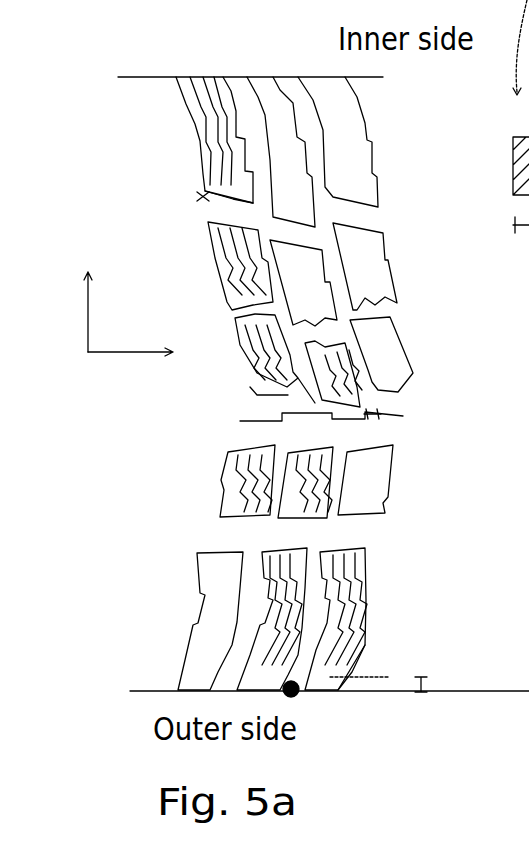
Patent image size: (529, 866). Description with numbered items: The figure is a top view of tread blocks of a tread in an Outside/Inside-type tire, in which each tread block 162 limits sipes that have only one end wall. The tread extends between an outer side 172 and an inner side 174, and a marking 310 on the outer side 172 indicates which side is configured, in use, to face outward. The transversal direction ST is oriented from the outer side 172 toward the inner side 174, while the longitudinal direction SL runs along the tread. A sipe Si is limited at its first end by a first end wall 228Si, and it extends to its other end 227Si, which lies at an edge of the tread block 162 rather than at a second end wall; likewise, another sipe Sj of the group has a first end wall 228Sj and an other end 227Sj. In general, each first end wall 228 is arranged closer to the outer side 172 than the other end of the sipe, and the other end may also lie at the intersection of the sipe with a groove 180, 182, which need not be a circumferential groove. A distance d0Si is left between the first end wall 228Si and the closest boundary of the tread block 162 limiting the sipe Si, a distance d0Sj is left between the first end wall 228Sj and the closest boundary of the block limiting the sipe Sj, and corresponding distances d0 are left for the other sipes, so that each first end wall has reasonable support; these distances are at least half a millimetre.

The inner side 174 is at (145, 77).
The outer side 172 is at (153, 693).
The tread block 162 is at (200, 88).
The other end of the sipe Si 227Si is at (226, 68).
The first end wall of the sipe Si 228Si is at (243, 193).
The sipe Si is at (235, 111).
The distance between the first end wall of sipe Si and the closest tread block bound d0Si is at (200, 196).
The first end wall 228 is at (360, 407).
The distance between first end wall and closest tread block boundary d0 is at (388, 412).
The groove 180 is at (313, 545).
The groove 182 is at (365, 480).
The sipe Sj is at (355, 582).
The other end of the sipe Sj 227Sj is at (345, 552).
The first end wall of the sipe Sj 228Sj is at (349, 662).
The distance between the first end wall of sipe Sj and the closest tread block bound d0Sj is at (402, 683).
The marking 310 is at (302, 700).
The transversal direction ST is at (109, 300).
The longitudinal direction SL is at (130, 371).